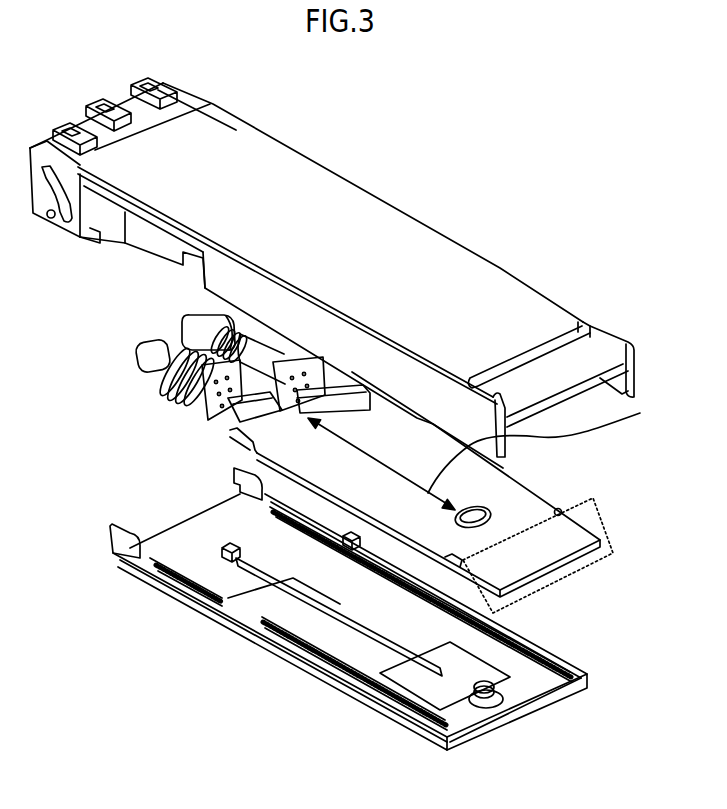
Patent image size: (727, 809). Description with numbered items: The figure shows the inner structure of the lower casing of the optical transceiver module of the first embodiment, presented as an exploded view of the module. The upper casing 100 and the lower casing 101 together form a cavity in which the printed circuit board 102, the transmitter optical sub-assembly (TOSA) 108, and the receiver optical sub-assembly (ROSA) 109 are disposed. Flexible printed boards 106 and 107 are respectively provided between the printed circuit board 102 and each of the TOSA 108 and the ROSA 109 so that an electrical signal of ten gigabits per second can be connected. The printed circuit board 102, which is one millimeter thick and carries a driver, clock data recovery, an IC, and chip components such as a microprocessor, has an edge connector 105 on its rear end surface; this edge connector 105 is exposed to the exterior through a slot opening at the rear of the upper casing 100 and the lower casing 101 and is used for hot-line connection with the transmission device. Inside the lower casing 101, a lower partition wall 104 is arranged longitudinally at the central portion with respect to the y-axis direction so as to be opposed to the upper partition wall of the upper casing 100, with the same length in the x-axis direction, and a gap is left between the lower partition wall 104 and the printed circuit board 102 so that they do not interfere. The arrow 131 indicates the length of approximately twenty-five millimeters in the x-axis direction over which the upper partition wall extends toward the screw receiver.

The upper casing 100 is at (290, 173).
The lower casing 101 is at (190, 602).
The printed circuit board 102 is at (520, 503).
The lower partition wall 104 is at (341, 622).
The edge connector 105 is at (580, 573).
The flexible printed board 106 is at (352, 411).
The flexible printed board 107 is at (252, 415).
The transmitter optical sub-assembly (TOSA) 108 is at (188, 325).
The receiver optical sub-assembly (ROSA) 109 is at (182, 402).
The arrow 131 is at (551, 447).